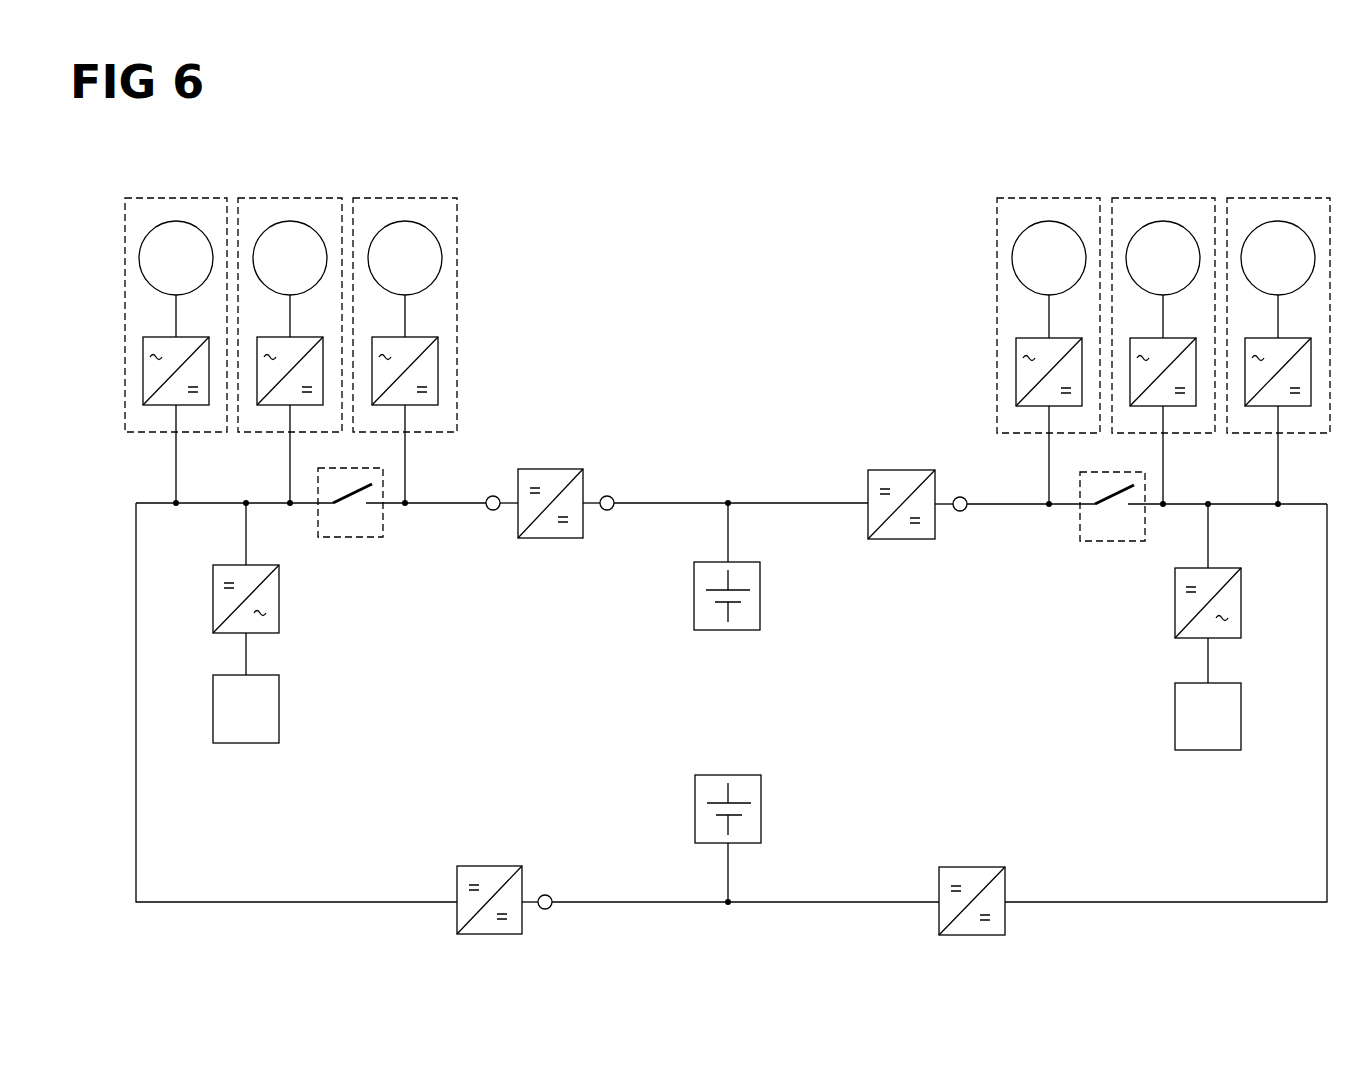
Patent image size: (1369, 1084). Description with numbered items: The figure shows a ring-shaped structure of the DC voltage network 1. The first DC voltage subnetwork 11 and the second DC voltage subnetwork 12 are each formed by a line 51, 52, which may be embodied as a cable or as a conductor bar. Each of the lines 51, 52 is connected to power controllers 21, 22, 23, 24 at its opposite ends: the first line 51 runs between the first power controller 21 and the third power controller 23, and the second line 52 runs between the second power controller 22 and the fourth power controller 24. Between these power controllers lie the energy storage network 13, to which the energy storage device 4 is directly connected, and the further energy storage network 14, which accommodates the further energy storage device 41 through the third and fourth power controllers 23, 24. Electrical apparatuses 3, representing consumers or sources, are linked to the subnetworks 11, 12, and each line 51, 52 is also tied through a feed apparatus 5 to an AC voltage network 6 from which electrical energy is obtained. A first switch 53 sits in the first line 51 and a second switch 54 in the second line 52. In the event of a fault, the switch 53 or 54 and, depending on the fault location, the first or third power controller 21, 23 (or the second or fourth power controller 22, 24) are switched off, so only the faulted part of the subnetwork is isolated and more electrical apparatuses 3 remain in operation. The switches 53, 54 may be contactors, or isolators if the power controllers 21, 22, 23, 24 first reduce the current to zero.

The DC voltage network 1 is at (945, 137).
The electrical apparatus 3 is at (176, 198).
The energy storage device 4 is at (731, 632).
The further energy storage device 41 is at (761, 808).
The feed apparatus 5 is at (279, 596).
The AC voltage network 6 is at (246, 743).
The first DC voltage subnetwork 11 is at (493, 511).
The second DC voltage subnetwork 12 is at (960, 512).
The energy storage network 13 is at (607, 511).
The further energy storage network 14 is at (545, 894).
The first power controller 21 is at (548, 468).
The second power controller 22 is at (891, 470).
The third power controller 23 is at (490, 866).
The fourth power controller 24 is at (965, 867).
The first line 51 is at (136, 766).
The second line 52 is at (1327, 780).
The first switch 53 is at (383, 537).
The second switch 54 is at (1145, 541).